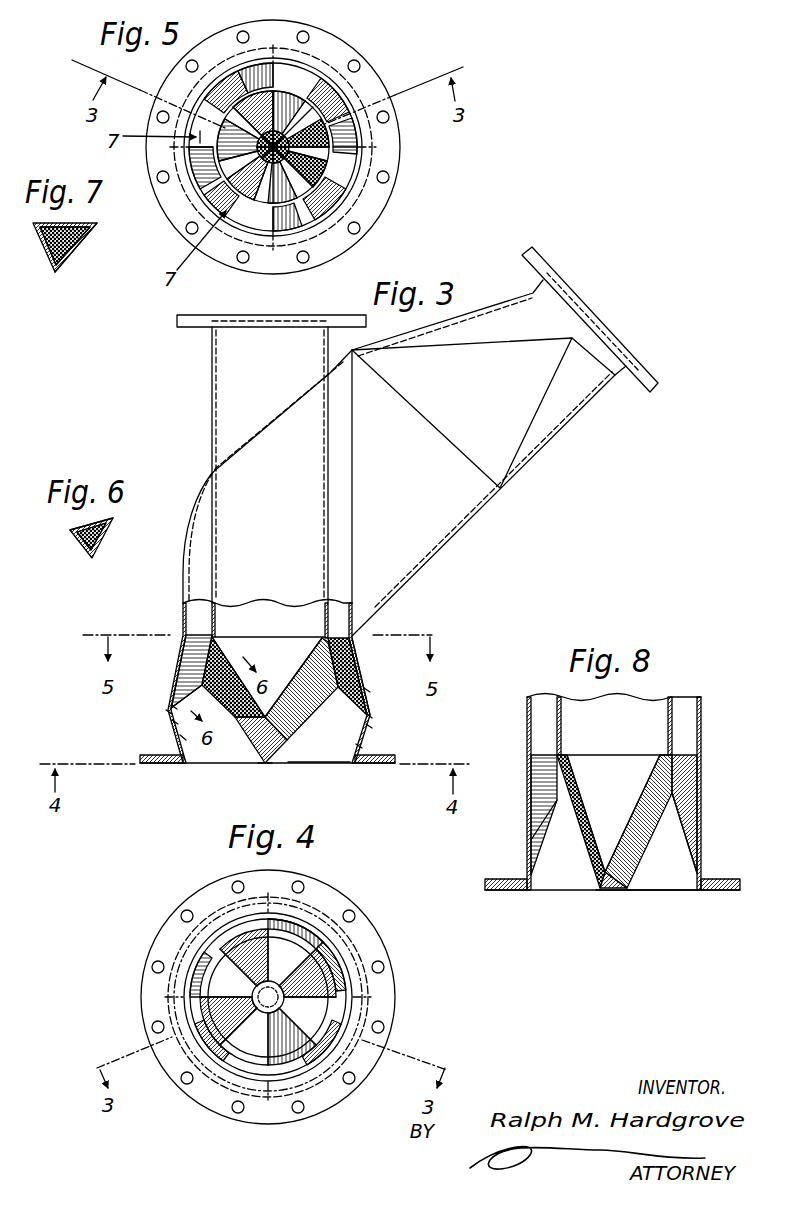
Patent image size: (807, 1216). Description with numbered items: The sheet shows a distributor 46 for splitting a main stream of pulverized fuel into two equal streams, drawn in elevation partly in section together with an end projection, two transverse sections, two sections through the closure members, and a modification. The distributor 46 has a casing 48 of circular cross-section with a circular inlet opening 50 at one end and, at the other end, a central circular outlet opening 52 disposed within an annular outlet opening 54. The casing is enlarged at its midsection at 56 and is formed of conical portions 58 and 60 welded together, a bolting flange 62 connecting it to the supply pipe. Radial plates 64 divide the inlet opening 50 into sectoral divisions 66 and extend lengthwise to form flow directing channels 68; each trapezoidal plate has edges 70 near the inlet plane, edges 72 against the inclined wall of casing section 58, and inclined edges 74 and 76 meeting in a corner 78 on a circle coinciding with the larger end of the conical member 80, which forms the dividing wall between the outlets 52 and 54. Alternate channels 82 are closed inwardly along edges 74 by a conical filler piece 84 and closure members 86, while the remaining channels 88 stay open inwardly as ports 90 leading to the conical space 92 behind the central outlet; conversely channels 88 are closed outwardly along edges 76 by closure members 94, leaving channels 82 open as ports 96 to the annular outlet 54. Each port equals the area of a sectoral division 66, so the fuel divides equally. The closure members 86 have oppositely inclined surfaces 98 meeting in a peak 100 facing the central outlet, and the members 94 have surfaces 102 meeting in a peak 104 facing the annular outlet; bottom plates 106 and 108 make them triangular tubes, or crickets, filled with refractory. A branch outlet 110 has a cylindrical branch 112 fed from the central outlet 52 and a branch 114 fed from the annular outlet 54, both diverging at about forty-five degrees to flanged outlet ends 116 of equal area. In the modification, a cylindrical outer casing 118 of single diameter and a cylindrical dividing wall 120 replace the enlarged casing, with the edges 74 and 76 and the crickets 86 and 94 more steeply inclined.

In FIG. 3, the distributor 46 is at (180, 677).
In FIG. 3, the casing 48 is at (368, 680).
In FIG. 3, the circular inlet opening 50 is at (247, 764).
In FIG. 8, the circular inlet opening 50 is at (582, 892).
In FIG. 3, the central circular outlet opening 52 is at (266, 636).
In FIG. 8, the central circular outlet opening 52 is at (607, 753).
In FIG. 3, the annular outlet opening 54 is at (187, 634).
In FIG. 8, the annular outlet opening 54 is at (545, 750).
In FIG. 3, the enlargement of the casing 56 is at (372, 717).
In FIG. 3, the conical portion 58 is at (166, 713).
In FIG. 3, the conical portion 60 is at (182, 655).
In FIG. 5, the bolting flange 62 is at (393, 196).
In FIG. 3, the bolting flange 62 is at (148, 765).
In FIG. 8, the bolting flange 62 is at (502, 893).
In FIG. 4, the bolting flange 62 is at (148, 1034).
In FIG. 3, the plates 64 is at (302, 760).
In FIG. 8, the plates 64 is at (655, 892).
In FIG. 4, the plates 64 is at (245, 1040).
In FIG. 4, the sectoral divisions 66 is at (220, 918).
In FIG. 3, the flow directing channels 68 is at (217, 757).
In FIG. 8, the flow directing channels 68 is at (658, 874).
In FIG. 3, the plate edges 70 is at (336, 764).
In FIG. 3, the plate edges 72 is at (182, 738).
In FIG. 3, the inclined plate edges 74 is at (228, 722).
In FIG. 8, the inclined plate edges 74 is at (580, 838).
In FIG. 3, the inclined plate edges 76 is at (173, 722).
In FIG. 8, the inclined plate edges 76 is at (532, 841).
In FIG. 3, the corner 78 is at (172, 708).
In FIG. 5, the conical member 80 is at (292, 163).
In FIG. 3, the conical member 80 is at (364, 668).
In FIG. 4, the alternate channels 82 is at (330, 955).
In FIG. 3, the conical filler piece 84 is at (266, 764).
In FIG. 8, the conical filler piece 84 is at (612, 892).
In FIG. 4, the conical filler piece 84 is at (252, 993).
In FIG. 5, the closure members (crickets) 86 is at (300, 105).
In FIG. 3, the closure members (crickets) 86 is at (205, 686).
In FIG. 8, the closure members (crickets) 86 is at (588, 820).
In FIG. 4, the closure members (crickets) 86 is at (320, 928).
In FIG. 4, the alternate channels 88 is at (185, 982).
In FIG. 5, the ports 90 is at (250, 117).
In FIG. 3, the ports 90 is at (298, 709).
In FIG. 8, the ports 90 is at (641, 821).
In FIG. 4, the ports 90 is at (274, 969).
In FIG. 3, the conical space 92 is at (275, 659).
In FIG. 5, the closure members (crickets) 94 is at (333, 103).
In FIG. 3, the closure members (crickets) 94 is at (356, 641).
In FIG. 8, the closure members (crickets) 94 is at (690, 782).
In FIG. 4, the closure members (crickets) 94 is at (205, 960).
In FIG. 5, the ports 96 is at (285, 85).
In FIG. 8, the ports 96 is at (545, 783).
In FIG. 4, the ports 96 is at (345, 985).
In FIG. 6, the oppositely inclined surfaces 98 is at (78, 528).
In FIG. 5, the peak or ridge 100 is at (313, 152).
In FIG. 6, the peak or ridge 100 is at (111, 521).
In FIG. 7, the oppositely inclined surfaces 102 is at (73, 223).
In FIG. 5, the peak or ridge 104 is at (337, 121).
In FIG. 7, the peak or ridge 104 is at (97, 228).
In FIG. 6, the bottom plate 106 is at (78, 549).
In FIG. 7, the bottom plate 108 is at (48, 248).
In FIG. 3, the branch outlet 110 is at (387, 490).
In FIG. 3, the branch 112 is at (210, 371).
In FIG. 3, the branch 114 is at (493, 493).
In FIG. 3, the flanged outlet ends 116 is at (278, 314).
In FIG. 8, the cylindrical outer casing 118 is at (700, 853).
In FIG. 8, the dividing wall 120 is at (664, 778).